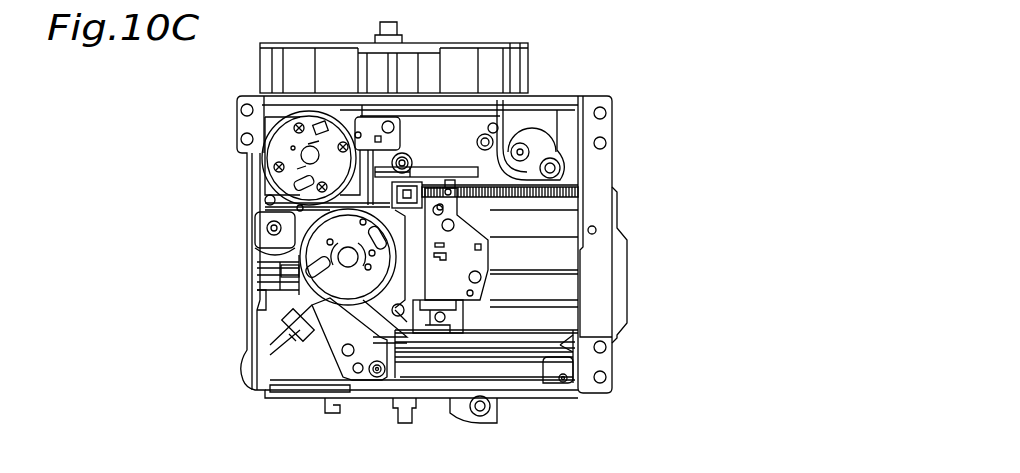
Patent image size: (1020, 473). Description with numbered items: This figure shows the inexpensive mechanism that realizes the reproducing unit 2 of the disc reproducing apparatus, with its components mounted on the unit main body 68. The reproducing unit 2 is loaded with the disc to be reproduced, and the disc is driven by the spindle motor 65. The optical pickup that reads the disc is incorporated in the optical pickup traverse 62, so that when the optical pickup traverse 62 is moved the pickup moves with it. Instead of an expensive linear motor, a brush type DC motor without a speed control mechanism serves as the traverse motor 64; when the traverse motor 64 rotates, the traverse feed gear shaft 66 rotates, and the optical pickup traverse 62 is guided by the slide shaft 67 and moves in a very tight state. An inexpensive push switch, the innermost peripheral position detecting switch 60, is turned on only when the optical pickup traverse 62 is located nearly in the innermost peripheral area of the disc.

The reproducing unit 2 is at (638, 302).
The innermost peripheral position detecting switch 60 is at (270, 207).
The optical pickup traverse 62 is at (450, 248).
The traverse motor 64 is at (283, 141).
The spindle motor 65 is at (342, 280).
The traverse feed gear shaft 66 is at (552, 192).
The slide shaft 67 is at (563, 343).
The unit main body 68 is at (538, 100).